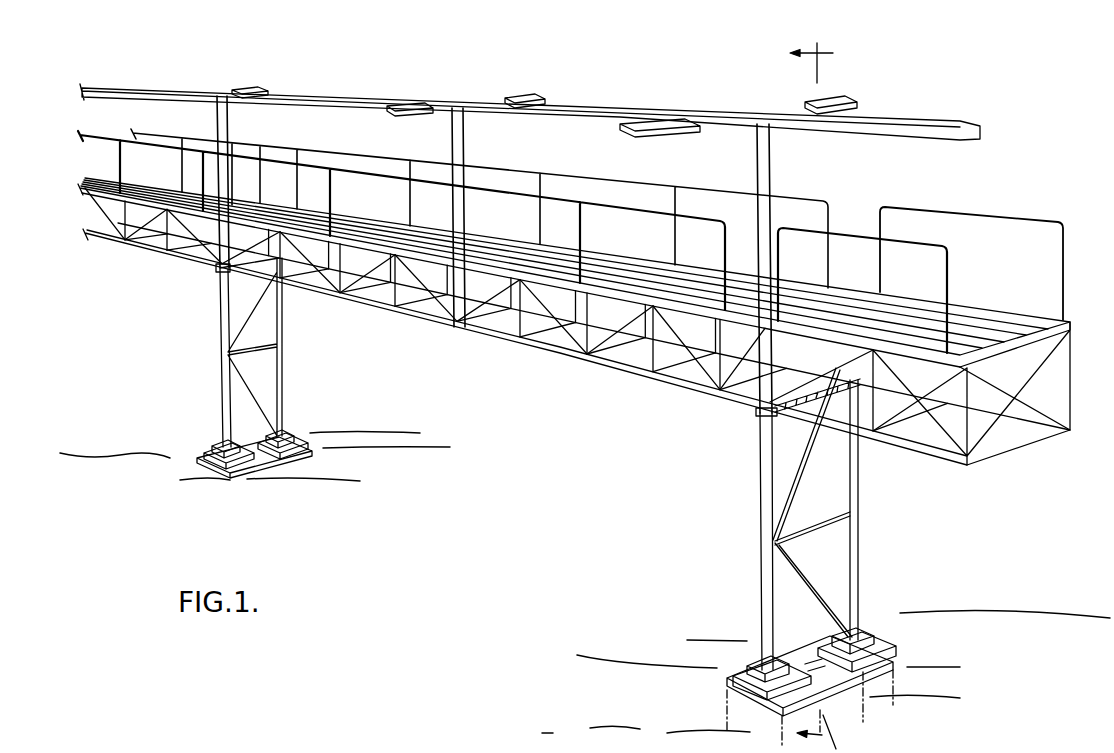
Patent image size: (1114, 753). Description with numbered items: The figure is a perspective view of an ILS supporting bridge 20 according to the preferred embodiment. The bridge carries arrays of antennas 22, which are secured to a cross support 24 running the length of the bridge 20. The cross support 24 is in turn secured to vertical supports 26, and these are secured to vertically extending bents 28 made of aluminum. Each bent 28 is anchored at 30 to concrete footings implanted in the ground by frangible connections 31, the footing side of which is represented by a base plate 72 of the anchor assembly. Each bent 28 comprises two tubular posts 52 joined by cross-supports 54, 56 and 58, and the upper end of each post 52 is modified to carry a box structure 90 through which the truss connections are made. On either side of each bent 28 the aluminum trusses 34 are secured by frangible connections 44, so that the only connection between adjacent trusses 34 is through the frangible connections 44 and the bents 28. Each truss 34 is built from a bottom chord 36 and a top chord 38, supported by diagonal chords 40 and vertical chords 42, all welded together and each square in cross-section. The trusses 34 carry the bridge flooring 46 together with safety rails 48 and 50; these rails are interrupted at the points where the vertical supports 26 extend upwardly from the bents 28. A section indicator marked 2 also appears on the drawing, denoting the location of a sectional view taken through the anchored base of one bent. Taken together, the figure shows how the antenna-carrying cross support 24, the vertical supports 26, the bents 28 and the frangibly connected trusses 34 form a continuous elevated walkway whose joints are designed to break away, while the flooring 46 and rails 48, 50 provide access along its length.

The section line 2- 2 is at (821, 397).
The ILS supporting bridge 20 is at (585, 397).
The arrays of antennas 22 is at (858, 101).
The cross support 24 is at (963, 123).
The vertical supports 26 is at (228, 124).
The bents 28 is at (287, 367).
The anchoring location 30 is at (823, 556).
The frangible connections 31 is at (874, 627).
The aluminum trusses 34 is at (576, 326).
The bottom chord 36 is at (402, 320).
The top chord 38 is at (483, 272).
The diagonal chords 40 is at (630, 322).
The vertical chords 42 is at (587, 314).
The frangible connections 44 is at (195, 276).
The bridge flooring 46 is at (638, 268).
The safety rail 48 is at (930, 245).
The safety rail 50 is at (997, 213).
The tubular posts 52 is at (760, 532).
The cross-support 54 is at (823, 555).
The cross-support 56 is at (814, 517).
The cross-support 58 is at (805, 453).
The base plate 72 is at (808, 660).
The box structure 90 is at (745, 424).